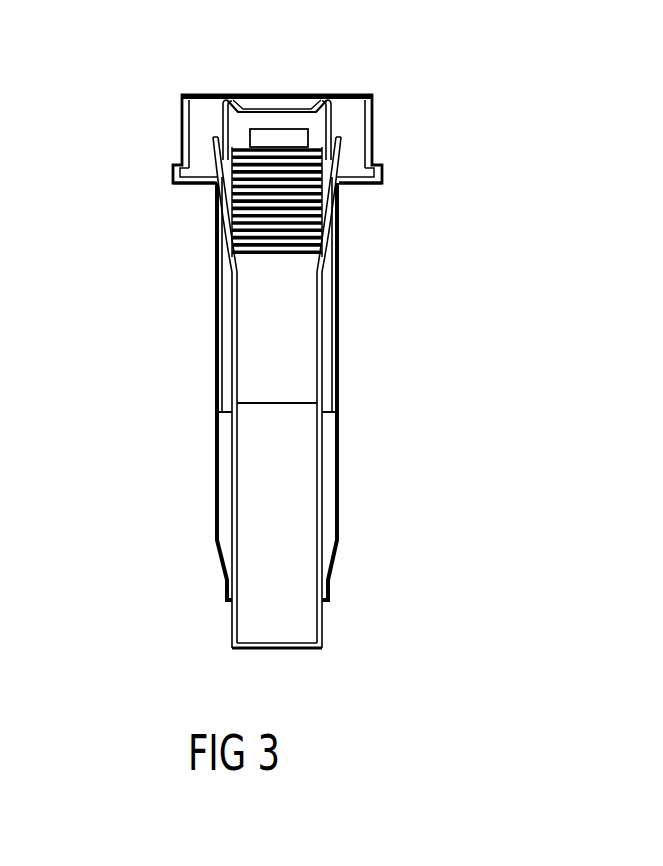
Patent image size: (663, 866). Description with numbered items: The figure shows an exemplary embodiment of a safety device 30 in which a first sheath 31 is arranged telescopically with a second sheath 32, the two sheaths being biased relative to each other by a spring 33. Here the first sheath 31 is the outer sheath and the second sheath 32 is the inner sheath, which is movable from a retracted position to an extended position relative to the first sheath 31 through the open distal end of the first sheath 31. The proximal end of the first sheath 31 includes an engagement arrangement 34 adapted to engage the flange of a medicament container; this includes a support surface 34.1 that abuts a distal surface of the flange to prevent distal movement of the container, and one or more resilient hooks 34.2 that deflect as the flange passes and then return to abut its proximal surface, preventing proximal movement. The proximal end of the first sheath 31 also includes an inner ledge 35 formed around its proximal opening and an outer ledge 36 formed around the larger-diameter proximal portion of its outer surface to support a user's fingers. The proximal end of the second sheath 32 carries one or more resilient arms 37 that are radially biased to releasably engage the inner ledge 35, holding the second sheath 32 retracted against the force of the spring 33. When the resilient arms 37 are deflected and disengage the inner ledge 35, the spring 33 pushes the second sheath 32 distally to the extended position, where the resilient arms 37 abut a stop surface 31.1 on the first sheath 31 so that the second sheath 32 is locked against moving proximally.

The safety device 30 is at (411, 101).
The first sheath 31 is at (337, 362).
The stop surface 31.1 is at (215, 418).
The second sheath 32 is at (322, 493).
The spring 33 is at (325, 213).
The engagement arrangement 34 is at (303, 97).
The support surface 34.1 is at (337, 97).
The resilient hooks 34.2 is at (228, 97).
The inner ledge 35 is at (214, 184).
The outer ledge 36 is at (175, 177).
The resilient arms 37 is at (213, 135).